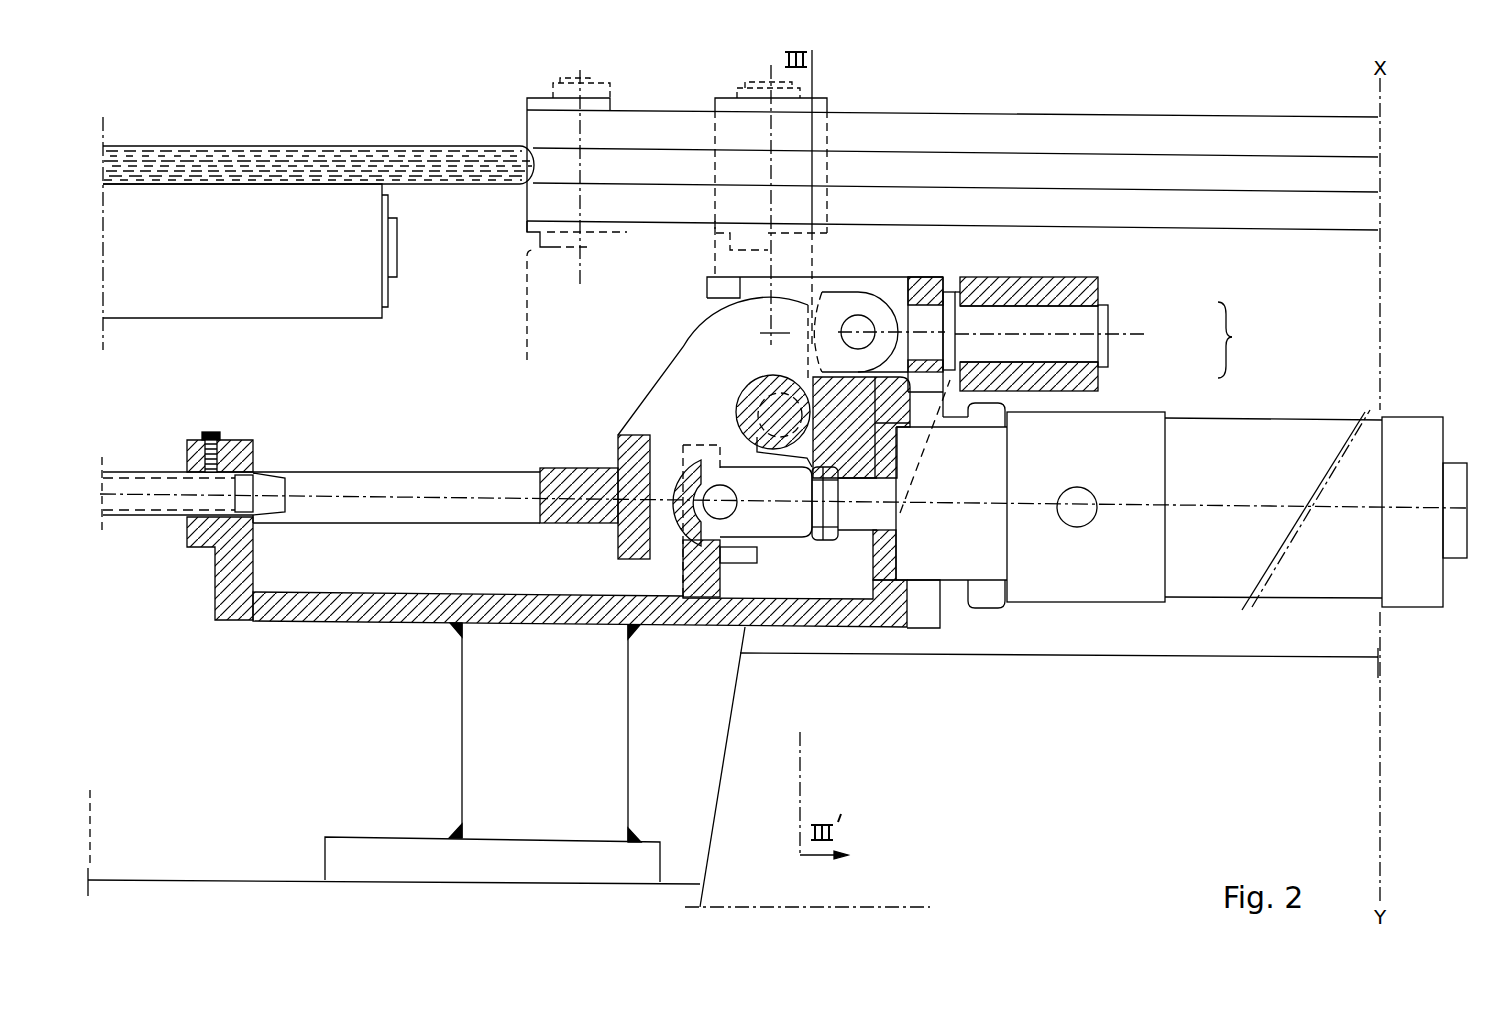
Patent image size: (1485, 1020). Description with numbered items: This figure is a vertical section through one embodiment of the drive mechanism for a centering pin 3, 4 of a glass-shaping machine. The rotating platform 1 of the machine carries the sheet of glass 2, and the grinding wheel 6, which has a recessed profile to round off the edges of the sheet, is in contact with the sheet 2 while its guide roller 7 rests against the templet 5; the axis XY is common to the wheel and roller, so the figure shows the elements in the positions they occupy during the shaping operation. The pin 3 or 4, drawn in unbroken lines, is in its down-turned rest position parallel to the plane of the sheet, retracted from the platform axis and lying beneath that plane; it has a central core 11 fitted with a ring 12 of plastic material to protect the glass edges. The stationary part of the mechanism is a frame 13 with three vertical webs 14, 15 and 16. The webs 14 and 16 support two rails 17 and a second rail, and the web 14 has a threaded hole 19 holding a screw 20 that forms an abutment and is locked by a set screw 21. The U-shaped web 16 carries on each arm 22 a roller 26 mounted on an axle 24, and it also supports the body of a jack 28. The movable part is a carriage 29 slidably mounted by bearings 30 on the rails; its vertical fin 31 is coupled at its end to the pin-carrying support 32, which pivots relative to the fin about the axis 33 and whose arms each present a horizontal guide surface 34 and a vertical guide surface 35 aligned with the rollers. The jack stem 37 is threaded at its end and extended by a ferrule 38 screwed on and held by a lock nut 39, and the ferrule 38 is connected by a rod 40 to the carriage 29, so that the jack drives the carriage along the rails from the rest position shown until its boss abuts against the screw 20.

The rotating platform 1 is at (222, 248).
The sheet of glass 2 is at (278, 160).
The centering pin 3 is at (1244, 357).
The centering pin 4 is at (1244, 319).
The templet 5 is at (153, 894).
The grinding wheel 6 is at (1027, 128).
The guide roller 7 is at (1222, 733).
The central core 11 is at (1090, 350).
The ring 12 is at (1095, 292).
The frame 13 is at (490, 817).
The vertical web 14 is at (215, 583).
The vertical web 15 is at (700, 582).
The vertical web 16 is at (880, 545).
The rail 17 is at (398, 517).
The threaded hole 19 is at (255, 519).
The screw 20 is at (108, 517).
The set screw 21 is at (210, 435).
The arm 22 is at (897, 500).
The axle 24 is at (742, 380).
The roller 26 is at (735, 405).
The jack 28 is at (1388, 568).
The carriage 29 is at (660, 465).
The bearing 30 is at (567, 513).
The vertical fin 31 is at (733, 348).
The pin-carrying support 32 is at (855, 280).
The axis 33 is at (862, 316).
The guide surface 34 is at (736, 297).
The guide surface 35 is at (818, 380).
The jack stem 37 is at (855, 440).
The ferrule 38 is at (766, 515).
The lock nut 39 is at (823, 540).
The rod 40 is at (722, 519).